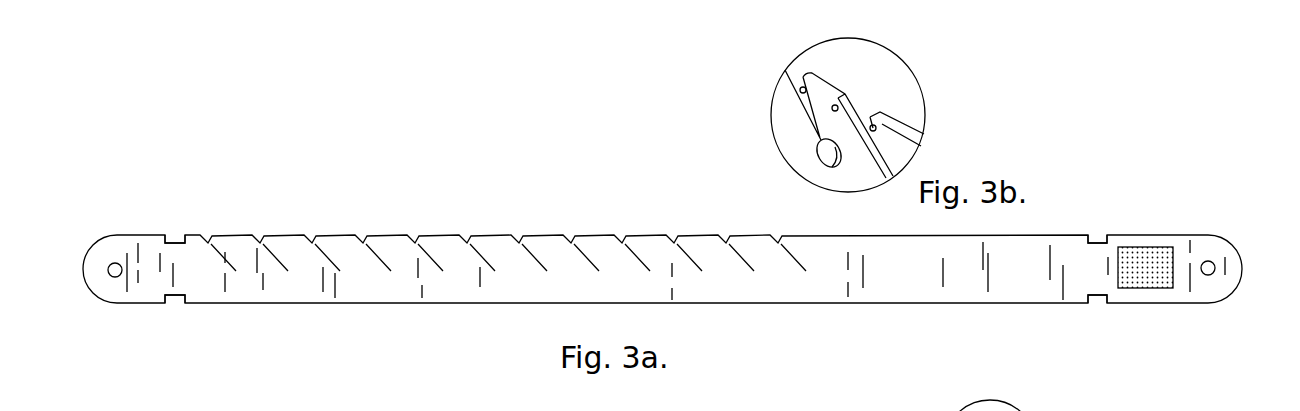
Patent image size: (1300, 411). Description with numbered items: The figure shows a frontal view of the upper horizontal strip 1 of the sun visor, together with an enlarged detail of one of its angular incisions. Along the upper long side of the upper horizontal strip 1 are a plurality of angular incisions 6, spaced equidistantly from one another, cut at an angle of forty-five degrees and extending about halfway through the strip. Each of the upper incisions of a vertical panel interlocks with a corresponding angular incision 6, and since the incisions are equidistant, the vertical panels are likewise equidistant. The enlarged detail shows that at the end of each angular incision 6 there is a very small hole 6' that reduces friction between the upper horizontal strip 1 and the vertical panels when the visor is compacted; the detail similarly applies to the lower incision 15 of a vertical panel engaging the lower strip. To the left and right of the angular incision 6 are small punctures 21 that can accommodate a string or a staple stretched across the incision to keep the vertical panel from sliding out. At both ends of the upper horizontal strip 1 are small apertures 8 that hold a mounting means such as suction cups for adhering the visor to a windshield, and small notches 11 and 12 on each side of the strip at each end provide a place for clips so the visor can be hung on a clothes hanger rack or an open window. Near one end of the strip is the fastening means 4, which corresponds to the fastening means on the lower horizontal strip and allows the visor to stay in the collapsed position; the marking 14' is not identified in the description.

In FIG. 3A, the upper horizontal strip 1 is at (148, 294).
In FIG. 3A, the fastening means 4 is at (1150, 280).
In FIG. 3A, the angular incisions 6 is at (508, 213).
In FIG. 3B, the small holes 6' is at (758, 153).
In FIG. 3A, the small apertures 8 is at (111, 264).
In FIG. 3A, the small notches 11 is at (175, 295).
In FIG. 3A, the small notches 12 is at (1099, 297).
In FIG. 3A, the lower incision 15 is at (333, 406).
In FIG. 3A, the strip element 14' is at (1039, 403).
In FIG. 3B, the small punctures 21 is at (878, 124).